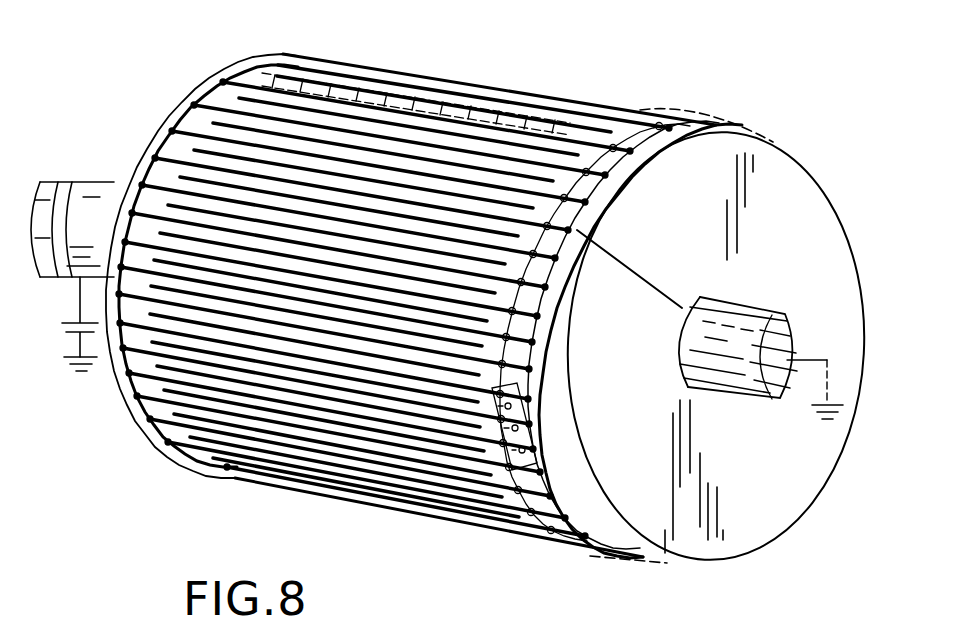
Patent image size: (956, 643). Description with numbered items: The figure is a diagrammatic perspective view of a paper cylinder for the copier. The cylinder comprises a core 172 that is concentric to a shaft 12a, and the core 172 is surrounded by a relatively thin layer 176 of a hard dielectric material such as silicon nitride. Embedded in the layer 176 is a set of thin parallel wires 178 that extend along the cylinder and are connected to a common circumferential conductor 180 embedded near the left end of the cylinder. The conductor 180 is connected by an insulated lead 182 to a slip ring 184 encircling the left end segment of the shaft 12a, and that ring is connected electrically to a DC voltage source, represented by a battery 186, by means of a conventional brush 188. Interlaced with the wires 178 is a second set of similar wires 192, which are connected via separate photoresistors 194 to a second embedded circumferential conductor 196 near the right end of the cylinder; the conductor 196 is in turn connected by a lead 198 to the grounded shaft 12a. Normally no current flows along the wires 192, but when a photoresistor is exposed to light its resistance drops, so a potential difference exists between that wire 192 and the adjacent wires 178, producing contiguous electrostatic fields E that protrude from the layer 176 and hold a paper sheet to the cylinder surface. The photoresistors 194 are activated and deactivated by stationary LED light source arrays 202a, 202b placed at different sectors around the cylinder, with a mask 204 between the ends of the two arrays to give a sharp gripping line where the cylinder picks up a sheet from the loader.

The core 172 is at (813, 204).
The layer 176 is at (631, 162).
The wires 178 is at (232, 88).
The common circumferential conductor 180 is at (165, 108).
The insulated lead 182 is at (92, 230).
The slip ring 184 is at (58, 180).
The battery 186 is at (66, 357).
The brush 188 is at (66, 323).
The second set of wires 192 is at (271, 67).
The photoresistors 194 is at (516, 357).
The second embedded circumferential conductor 196 is at (621, 180).
The lead 198 is at (652, 286).
The light source array 202a is at (668, 106).
The light source array 202b is at (590, 556).
The mask 204 is at (548, 420).
The shaft 12a is at (750, 313).
The electrostatic fields E is at (335, 90).